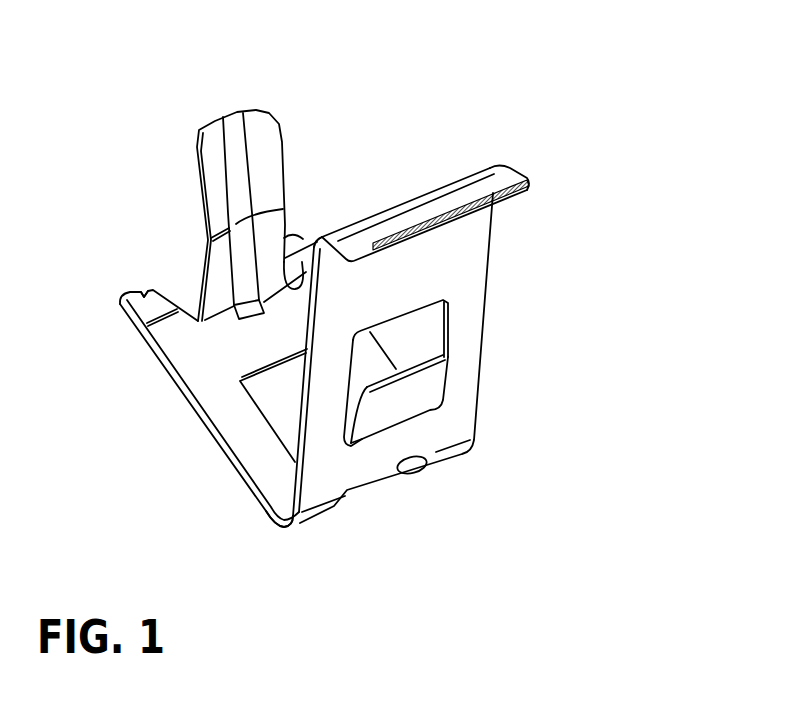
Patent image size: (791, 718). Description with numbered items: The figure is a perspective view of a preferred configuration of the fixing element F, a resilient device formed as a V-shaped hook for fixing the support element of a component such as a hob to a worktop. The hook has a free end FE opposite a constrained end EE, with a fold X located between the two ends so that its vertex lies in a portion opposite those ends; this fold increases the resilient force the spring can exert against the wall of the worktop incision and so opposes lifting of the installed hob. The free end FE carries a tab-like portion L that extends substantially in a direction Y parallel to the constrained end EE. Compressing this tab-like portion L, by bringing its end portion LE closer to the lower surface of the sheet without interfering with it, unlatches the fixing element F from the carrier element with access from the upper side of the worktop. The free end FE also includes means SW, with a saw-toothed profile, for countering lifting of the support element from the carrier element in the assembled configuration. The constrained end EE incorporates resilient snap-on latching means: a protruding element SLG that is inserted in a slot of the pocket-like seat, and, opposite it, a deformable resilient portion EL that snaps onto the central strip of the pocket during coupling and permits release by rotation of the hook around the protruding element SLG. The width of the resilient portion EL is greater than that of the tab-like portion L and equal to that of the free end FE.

The free end FE is at (198, 360).
The constrained end EE is at (457, 257).
The deformable resilient portion EL is at (481, 175).
The end portion LE is at (235, 127).
The tab-like portion L is at (294, 287).
The means for countering lifting SW is at (142, 297).
The protruding element SLG is at (400, 403).
The fixing element F is at (522, 317).
The fold X is at (278, 530).
The direction Y is at (691, 232).